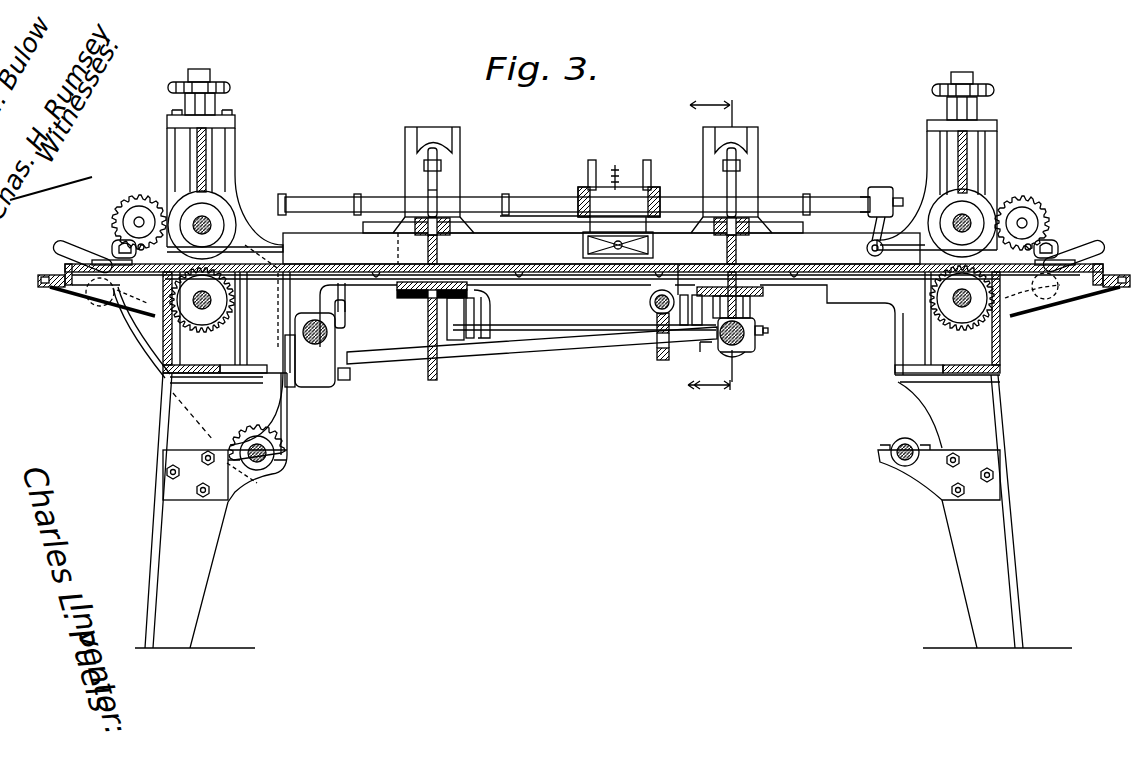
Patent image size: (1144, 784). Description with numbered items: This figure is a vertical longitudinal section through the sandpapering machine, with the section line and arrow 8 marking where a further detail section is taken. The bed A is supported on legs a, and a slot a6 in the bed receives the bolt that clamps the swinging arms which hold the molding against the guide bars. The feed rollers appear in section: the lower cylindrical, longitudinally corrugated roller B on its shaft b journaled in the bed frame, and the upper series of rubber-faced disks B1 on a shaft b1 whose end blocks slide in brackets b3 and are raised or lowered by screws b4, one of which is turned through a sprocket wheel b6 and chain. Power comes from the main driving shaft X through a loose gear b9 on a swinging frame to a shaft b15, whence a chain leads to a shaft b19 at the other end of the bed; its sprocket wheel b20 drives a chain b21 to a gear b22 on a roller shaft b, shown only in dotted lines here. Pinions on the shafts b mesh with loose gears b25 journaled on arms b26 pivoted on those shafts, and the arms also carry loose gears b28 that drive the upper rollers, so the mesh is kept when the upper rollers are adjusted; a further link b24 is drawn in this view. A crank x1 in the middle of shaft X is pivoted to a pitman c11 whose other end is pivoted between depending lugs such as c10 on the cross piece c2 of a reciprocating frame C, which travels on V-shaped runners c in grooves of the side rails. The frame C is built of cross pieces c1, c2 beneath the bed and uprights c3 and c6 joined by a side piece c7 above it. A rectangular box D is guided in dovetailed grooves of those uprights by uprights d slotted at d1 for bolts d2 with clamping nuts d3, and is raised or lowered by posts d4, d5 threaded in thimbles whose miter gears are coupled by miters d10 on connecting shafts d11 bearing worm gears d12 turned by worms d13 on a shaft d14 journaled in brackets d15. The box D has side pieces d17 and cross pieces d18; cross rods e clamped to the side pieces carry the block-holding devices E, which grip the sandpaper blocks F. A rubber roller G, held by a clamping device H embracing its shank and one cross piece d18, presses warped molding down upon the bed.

The bed A is at (581, 327).
The legs a is at (188, 549).
The slot a6 is at (45, 287).
The lower feed roller B is at (147, 350).
The upper feed rollers B1 is at (228, 218).
The shaft of the lower roller b is at (218, 302).
The shaft of the upper rollers b1 is at (207, 215).
The brackets b3 is at (985, 148).
The screws b4 is at (200, 180).
The sprocket wheel b6 is at (214, 91).
The loose gear b9 is at (230, 155).
The shaft b15 is at (259, 462).
The shaft b19 is at (897, 470).
The sprocket wheel b20 is at (258, 432).
The chain b21 is at (288, 428).
The gear b22 is at (150, 335).
The link b24 is at (143, 323).
The loose gears b25 is at (122, 244).
The arms b26 is at (75, 256).
The loose gears b28 is at (136, 198).
The reciprocating frame C is at (505, 185).
The runners c is at (393, 228).
The cross piece c1 is at (403, 303).
The cross piece c2 is at (757, 296).
The upright c3 is at (757, 150).
The upright c6 is at (460, 143).
The side piece c7 is at (528, 226).
The depending lug c10 is at (750, 313).
The pitman c11 is at (578, 353).
The box D is at (343, 196).
The uprights d is at (407, 176).
The slot d1 is at (437, 182).
The bolts d2 is at (425, 322).
The clamping nuts d3 is at (437, 167).
The post d4 is at (438, 256).
The post d5 is at (738, 256).
The miters d10 is at (452, 347).
The connecting shafts d11 is at (520, 337).
The worm gears d12 is at (440, 127).
The worms d13 is at (655, 308).
The shaft d14 is at (649, 300).
The brackets d15 is at (679, 266).
The side pieces d17 is at (864, 202).
The cross pieces d18 is at (322, 188).
The block-holding devices E is at (614, 196).
The cross rods e is at (602, 190).
The blocks F is at (572, 250).
The rollers G is at (866, 248).
The clamping device H is at (892, 192).
The main driving shaft X is at (315, 344).
The crank x1 is at (345, 382).
The section line 8— 8 is at (711, 246).